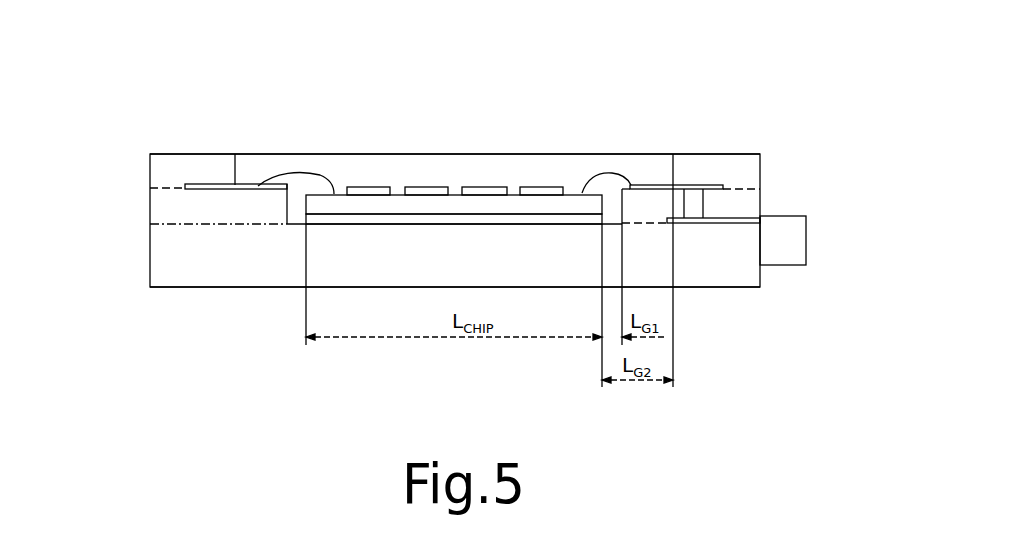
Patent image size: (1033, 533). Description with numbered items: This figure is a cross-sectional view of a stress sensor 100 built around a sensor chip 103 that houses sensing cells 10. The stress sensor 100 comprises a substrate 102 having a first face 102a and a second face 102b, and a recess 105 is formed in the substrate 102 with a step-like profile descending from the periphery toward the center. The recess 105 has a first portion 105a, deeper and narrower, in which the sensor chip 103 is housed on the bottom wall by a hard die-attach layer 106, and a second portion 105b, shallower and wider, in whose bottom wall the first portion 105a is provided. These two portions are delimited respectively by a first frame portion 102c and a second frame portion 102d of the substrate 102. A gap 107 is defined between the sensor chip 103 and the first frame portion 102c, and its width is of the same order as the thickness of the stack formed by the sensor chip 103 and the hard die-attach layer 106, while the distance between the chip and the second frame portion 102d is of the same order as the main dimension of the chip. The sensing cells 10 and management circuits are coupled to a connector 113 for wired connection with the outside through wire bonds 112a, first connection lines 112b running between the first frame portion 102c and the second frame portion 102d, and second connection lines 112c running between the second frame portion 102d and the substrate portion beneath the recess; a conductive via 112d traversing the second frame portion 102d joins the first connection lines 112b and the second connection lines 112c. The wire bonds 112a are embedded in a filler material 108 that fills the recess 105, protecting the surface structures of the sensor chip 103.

The stress sensor 100 is at (829, 96).
The substrate 102 is at (128, 252).
The first face 102a is at (203, 153).
The second face 102b is at (207, 289).
The first frame portion 102c is at (165, 205).
The second frame portion 102d is at (165, 173).
The sensor chip 103 is at (364, 205).
The recess 105 is at (548, 171).
The first portion 105a is at (335, 193).
The second portion 105b is at (239, 169).
The hard die-attach layer 106 is at (333, 218).
The gap 107 is at (620, 172).
The filler material 108 is at (453, 168).
The sensing cells 10 is at (427, 188).
The wire bonds 112a is at (334, 194).
The first connection lines 112b is at (709, 184).
The second connection lines 112c is at (723, 226).
The conductive via 112d is at (693, 203).
The connector 113 is at (790, 245).